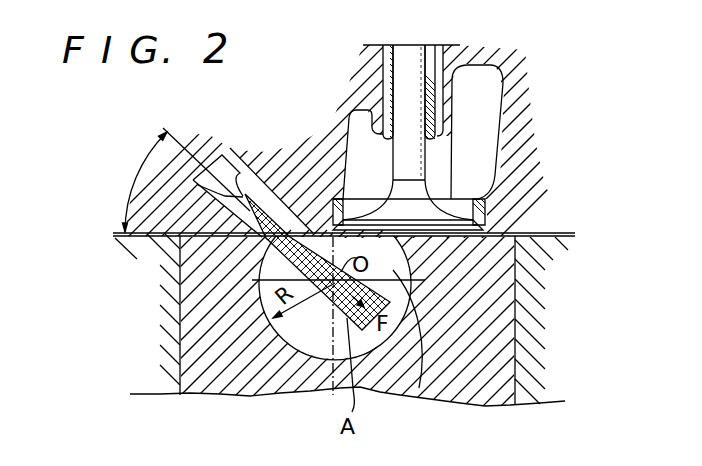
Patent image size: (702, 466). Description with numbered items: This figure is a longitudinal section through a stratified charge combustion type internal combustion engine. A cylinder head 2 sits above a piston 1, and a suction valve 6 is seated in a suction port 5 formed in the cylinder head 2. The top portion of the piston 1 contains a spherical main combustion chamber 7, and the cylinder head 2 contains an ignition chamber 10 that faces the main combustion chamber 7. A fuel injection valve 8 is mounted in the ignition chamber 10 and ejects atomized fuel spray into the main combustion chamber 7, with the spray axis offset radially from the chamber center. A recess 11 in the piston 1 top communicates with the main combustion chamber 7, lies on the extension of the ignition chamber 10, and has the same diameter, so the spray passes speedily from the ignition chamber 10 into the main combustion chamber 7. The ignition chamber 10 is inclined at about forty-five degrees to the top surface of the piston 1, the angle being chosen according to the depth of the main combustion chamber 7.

The piston 1 is at (499, 272).
The cylinder head 2 is at (499, 180).
The suction port 5 is at (484, 122).
The suction valve 6 is at (416, 75).
The main combustion chamber 7 is at (419, 388).
The fuel injection valve 8 is at (224, 173).
The ignition chamber 10 is at (263, 200).
The recess 11 is at (258, 248).